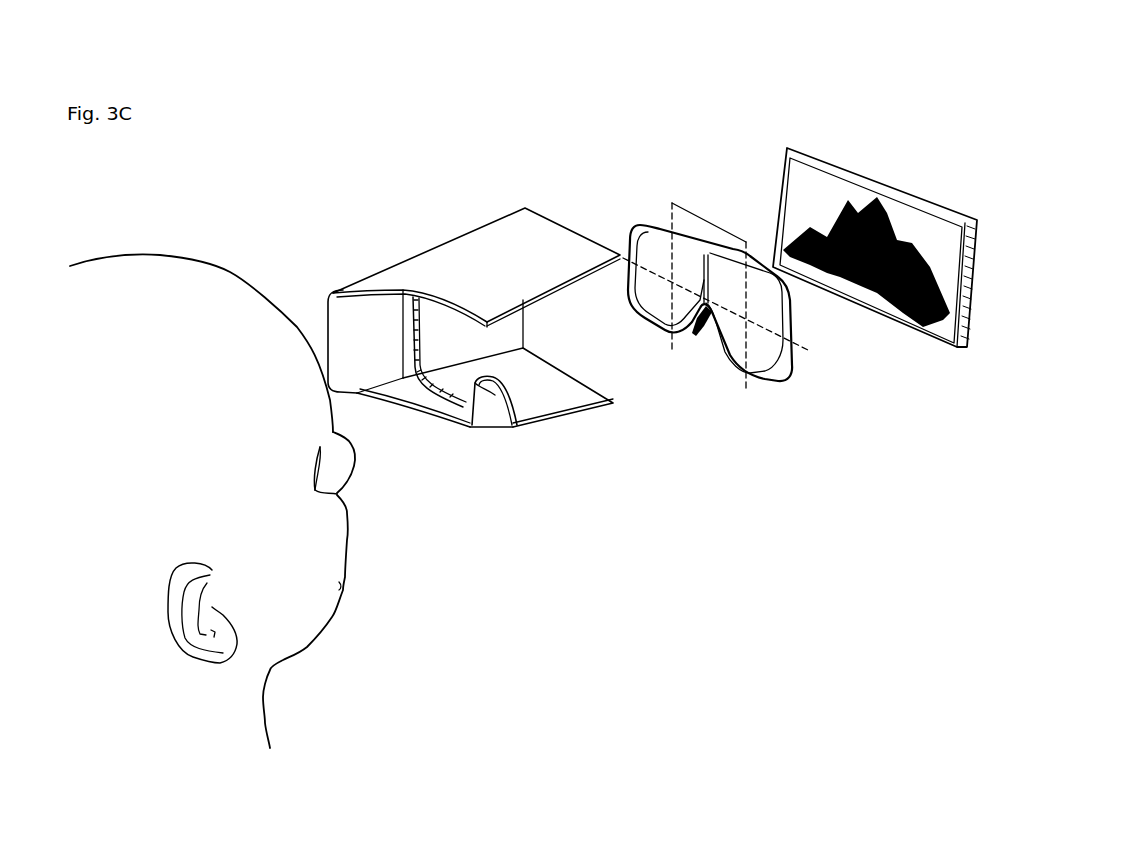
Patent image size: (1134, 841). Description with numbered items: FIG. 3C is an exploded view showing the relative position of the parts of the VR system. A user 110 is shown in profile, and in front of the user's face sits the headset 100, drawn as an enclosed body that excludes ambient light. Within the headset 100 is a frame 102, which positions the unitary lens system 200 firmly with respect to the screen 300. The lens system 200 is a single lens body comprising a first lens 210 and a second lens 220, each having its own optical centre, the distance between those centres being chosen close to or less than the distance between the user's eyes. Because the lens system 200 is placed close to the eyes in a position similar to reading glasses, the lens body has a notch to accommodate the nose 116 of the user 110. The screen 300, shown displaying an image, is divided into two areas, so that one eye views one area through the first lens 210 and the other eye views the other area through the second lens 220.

The headset 100 is at (474, 327).
The frame 102 is at (470, 408).
The user 110 is at (212, 501).
The nose 116 is at (337, 458).
The unitary lens system 200 is at (700, 302).
The first lens 210 is at (660, 333).
The second lens 220 is at (738, 375).
The screen 300 is at (777, 150).